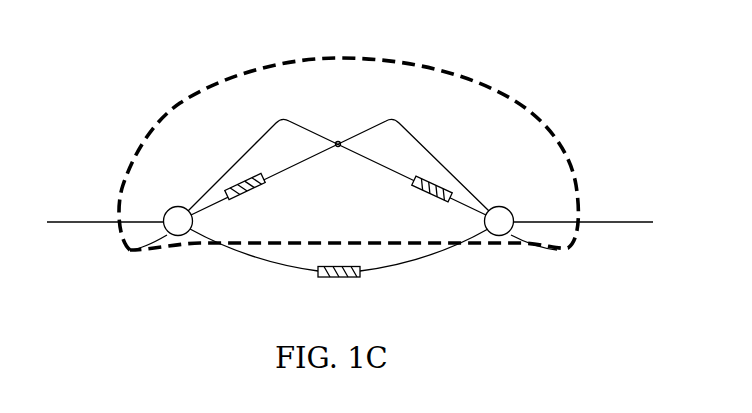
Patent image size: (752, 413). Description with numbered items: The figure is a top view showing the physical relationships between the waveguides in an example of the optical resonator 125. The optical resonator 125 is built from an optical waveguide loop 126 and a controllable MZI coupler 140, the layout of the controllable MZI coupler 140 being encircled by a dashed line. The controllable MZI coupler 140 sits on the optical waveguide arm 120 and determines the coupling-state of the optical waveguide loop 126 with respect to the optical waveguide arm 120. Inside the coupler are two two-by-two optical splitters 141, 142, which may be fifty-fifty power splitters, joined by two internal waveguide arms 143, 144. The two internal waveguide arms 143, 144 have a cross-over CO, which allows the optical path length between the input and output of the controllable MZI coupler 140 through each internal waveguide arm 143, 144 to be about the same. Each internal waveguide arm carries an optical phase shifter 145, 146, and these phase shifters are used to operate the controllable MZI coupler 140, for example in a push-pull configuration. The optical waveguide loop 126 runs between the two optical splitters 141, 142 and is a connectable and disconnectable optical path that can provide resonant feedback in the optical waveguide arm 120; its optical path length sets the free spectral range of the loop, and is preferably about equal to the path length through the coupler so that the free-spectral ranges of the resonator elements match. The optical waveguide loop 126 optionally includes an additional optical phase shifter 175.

The optical waveguide arm 120 is at (87, 220).
The optical resonator 125 is at (158, 66).
The optical waveguide loop 126 is at (252, 258).
The controllable MZI coupler 140 is at (501, 96).
The 2×2 optical splitter 141 is at (130, 250).
The 2×2 optical splitter 142 is at (557, 250).
The internal waveguide arm 143 is at (228, 170).
The internal waveguide arm 144 is at (450, 171).
The optical phase shifter 145 is at (428, 198).
The optical phase shifter 146 is at (250, 197).
The optical phase shifter 175 is at (338, 278).
The cross-over CO is at (341, 139).